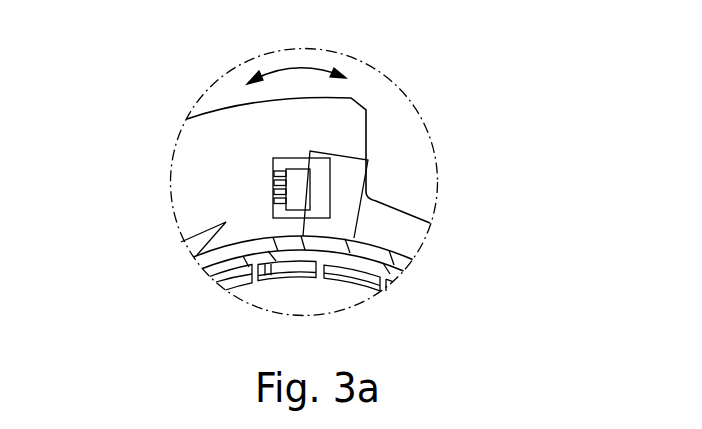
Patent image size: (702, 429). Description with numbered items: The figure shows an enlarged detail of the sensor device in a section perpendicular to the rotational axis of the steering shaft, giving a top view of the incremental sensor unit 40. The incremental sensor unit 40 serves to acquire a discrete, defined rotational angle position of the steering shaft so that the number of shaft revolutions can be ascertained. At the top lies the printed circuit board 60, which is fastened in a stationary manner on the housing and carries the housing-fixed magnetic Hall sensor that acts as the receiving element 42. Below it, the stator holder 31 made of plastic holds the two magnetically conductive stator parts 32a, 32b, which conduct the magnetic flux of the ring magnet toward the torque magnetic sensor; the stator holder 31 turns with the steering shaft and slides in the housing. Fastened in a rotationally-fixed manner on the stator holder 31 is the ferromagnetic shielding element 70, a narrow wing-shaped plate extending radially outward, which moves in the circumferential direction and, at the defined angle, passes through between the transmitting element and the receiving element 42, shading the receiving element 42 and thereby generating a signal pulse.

The printed circuit board 60 is at (222, 186).
The receiving element 42 is at (278, 158).
The shielding element 70 is at (347, 203).
The incremental sensor unit 40 is at (222, 205).
The stator holder 31 is at (392, 273).
The first stator part 32a is at (285, 266).
The second stator part 32b is at (353, 270).